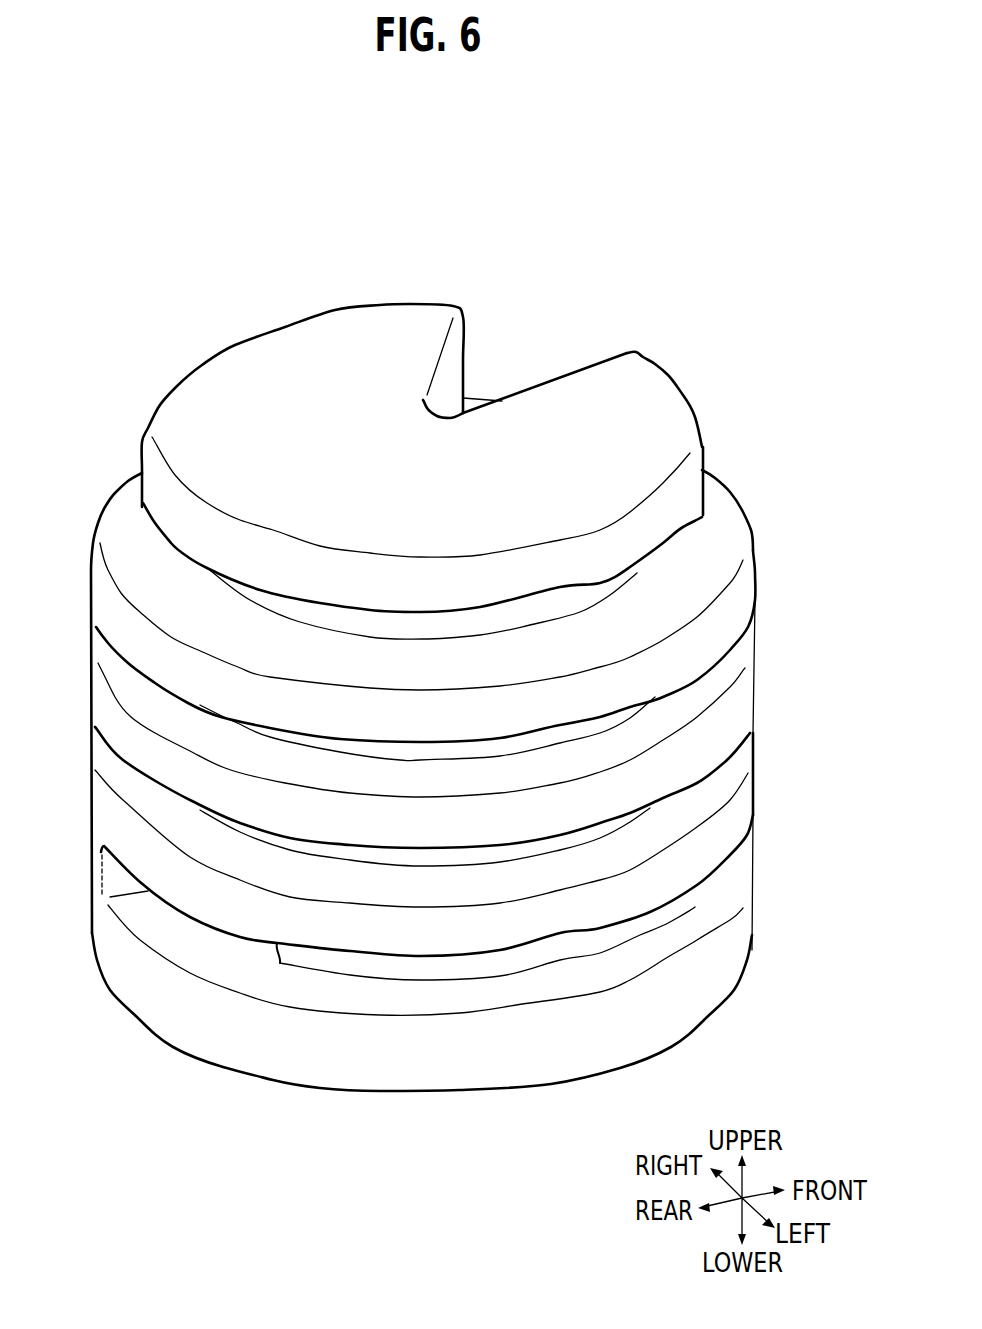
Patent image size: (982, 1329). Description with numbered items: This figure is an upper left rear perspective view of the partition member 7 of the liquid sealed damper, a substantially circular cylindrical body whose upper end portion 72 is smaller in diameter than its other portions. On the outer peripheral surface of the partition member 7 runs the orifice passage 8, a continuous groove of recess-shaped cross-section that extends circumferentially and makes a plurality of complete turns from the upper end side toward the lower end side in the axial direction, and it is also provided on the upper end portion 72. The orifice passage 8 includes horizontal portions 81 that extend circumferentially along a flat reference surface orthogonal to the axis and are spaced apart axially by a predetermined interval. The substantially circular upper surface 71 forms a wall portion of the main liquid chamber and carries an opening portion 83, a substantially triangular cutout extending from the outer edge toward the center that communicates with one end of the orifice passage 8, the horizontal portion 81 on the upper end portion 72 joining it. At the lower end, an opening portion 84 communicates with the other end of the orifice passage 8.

The partition member 7 is at (412, 291).
The upper surface 71 is at (277, 365).
The upper end portion 72 is at (109, 478).
The orifice passage 8 is at (474, 800).
The horizontal portions 81 is at (693, 589).
The opening portion 83 is at (578, 371).
The opening portion 84 is at (200, 933).